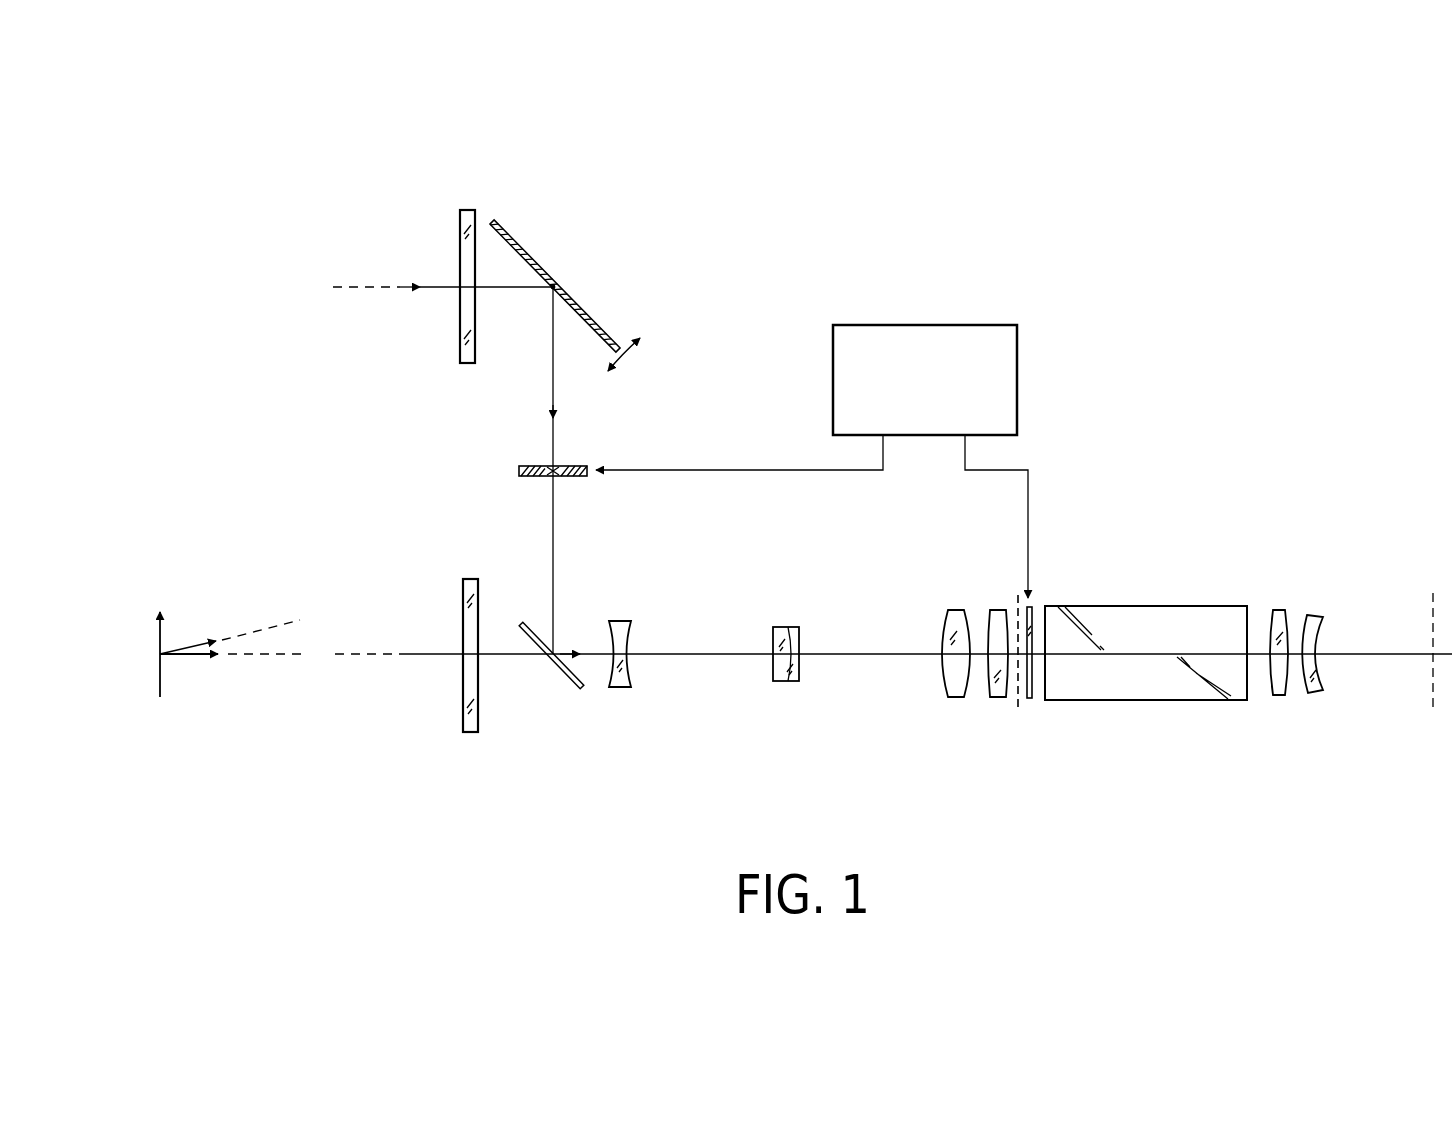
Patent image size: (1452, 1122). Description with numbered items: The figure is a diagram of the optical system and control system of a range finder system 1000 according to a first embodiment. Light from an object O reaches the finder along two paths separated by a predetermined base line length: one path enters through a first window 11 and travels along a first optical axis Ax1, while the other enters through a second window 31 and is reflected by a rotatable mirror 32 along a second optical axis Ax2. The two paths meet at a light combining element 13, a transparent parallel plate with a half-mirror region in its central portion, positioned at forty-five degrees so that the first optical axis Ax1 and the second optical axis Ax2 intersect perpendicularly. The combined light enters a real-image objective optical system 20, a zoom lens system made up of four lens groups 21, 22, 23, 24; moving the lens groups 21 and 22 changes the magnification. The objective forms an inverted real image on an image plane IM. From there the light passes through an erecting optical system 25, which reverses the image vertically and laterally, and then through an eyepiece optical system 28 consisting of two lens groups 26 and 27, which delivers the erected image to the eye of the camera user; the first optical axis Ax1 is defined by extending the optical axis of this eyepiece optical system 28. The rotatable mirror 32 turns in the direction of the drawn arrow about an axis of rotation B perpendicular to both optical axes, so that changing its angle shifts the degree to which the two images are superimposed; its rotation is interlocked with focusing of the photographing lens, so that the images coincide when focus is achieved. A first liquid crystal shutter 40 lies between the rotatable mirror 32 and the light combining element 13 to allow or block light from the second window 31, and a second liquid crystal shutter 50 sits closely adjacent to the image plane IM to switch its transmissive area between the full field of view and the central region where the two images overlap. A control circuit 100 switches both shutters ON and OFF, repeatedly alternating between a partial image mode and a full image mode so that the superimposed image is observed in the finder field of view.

The range finder system 1000 is at (995, 188).
The first window 11 is at (465, 710).
The light combining element 13 is at (556, 688).
The real-image objective optical system 20 is at (1013, 723).
The first lens group 21 is at (620, 622).
The second lens group 22 is at (785, 628).
The third lens group 23 is at (948, 616).
The fourth lens group 24 is at (1000, 608).
The erecting optical system 25 is at (1135, 606).
The first eyepiece lens group 26 is at (1280, 610).
The second eyepiece lens group 27 is at (1314, 615).
The eyepiece optical system 28 is at (1333, 719).
The second window 31 is at (467, 210).
The rotatable mirror 32 is at (533, 250).
The first liquid crystal shutter 40 is at (520, 467).
The second liquid crystal shutter 50 is at (1030, 605).
The control circuit 100 is at (1017, 388).
The object O is at (160, 680).
The axis of rotation B is at (550, 291).
The first optical axis Ax1 is at (495, 655).
The second optical axis Ax2 is at (553, 385).
The image plane IM is at (1020, 710).